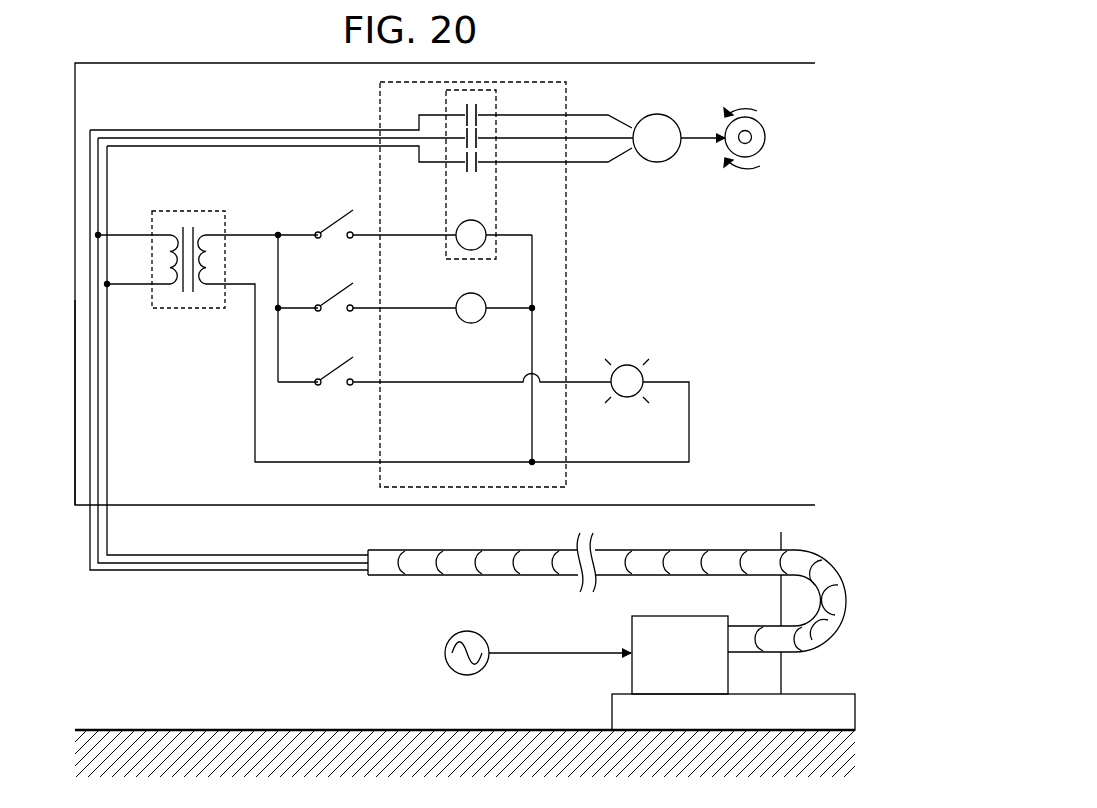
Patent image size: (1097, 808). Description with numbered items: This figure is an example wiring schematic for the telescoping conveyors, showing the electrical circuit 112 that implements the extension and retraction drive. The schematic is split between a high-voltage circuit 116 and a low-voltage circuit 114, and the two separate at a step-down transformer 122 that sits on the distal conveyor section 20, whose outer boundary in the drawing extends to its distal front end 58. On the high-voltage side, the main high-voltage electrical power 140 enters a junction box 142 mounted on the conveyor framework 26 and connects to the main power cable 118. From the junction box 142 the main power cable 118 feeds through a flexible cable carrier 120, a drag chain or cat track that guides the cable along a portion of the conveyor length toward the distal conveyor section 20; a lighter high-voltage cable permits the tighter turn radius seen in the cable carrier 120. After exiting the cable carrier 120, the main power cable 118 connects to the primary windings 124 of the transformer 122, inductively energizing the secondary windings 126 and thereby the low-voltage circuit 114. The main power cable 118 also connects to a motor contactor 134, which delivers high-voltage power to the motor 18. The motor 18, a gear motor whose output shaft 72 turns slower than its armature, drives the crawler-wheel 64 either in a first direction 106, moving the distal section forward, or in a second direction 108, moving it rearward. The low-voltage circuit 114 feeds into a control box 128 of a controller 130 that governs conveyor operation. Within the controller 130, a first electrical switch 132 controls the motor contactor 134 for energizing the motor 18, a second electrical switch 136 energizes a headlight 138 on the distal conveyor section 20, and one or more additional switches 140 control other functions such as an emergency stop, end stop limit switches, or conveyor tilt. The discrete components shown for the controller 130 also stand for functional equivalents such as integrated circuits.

The distal conveyor section 20 is at (204, 62).
The distal front end 58 is at (75, 478).
The main power cable 118 is at (107, 434).
The control box 128 is at (567, 252).
The motor contactor 134 is at (497, 195).
The high-voltage circuit 116 is at (127, 235).
The step-down transformer 122 is at (187, 310).
The primary windings 124 is at (168, 237).
The secondary windings 126 is at (204, 235).
The low-voltage circuit 114 is at (253, 235).
The first electrical switch 132 is at (336, 218).
The second electrical switch 136 is at (334, 395).
The electrical circuit 112 is at (532, 280).
The controller 130 is at (290, 462).
The headlight 138 is at (627, 364).
The motor 18 is at (657, 163).
The crawler-wheel 64 is at (765, 144).
The output shaft 72 is at (751, 132).
The second direction 108 is at (743, 104).
The first direction 106 is at (743, 170).
The flexible cable carrier 120 is at (649, 550).
The junction box 142 is at (632, 633).
The conveyor framework 26 is at (781, 597).
The additional switches / main high-voltage electrical power 140 is at (335, 292).